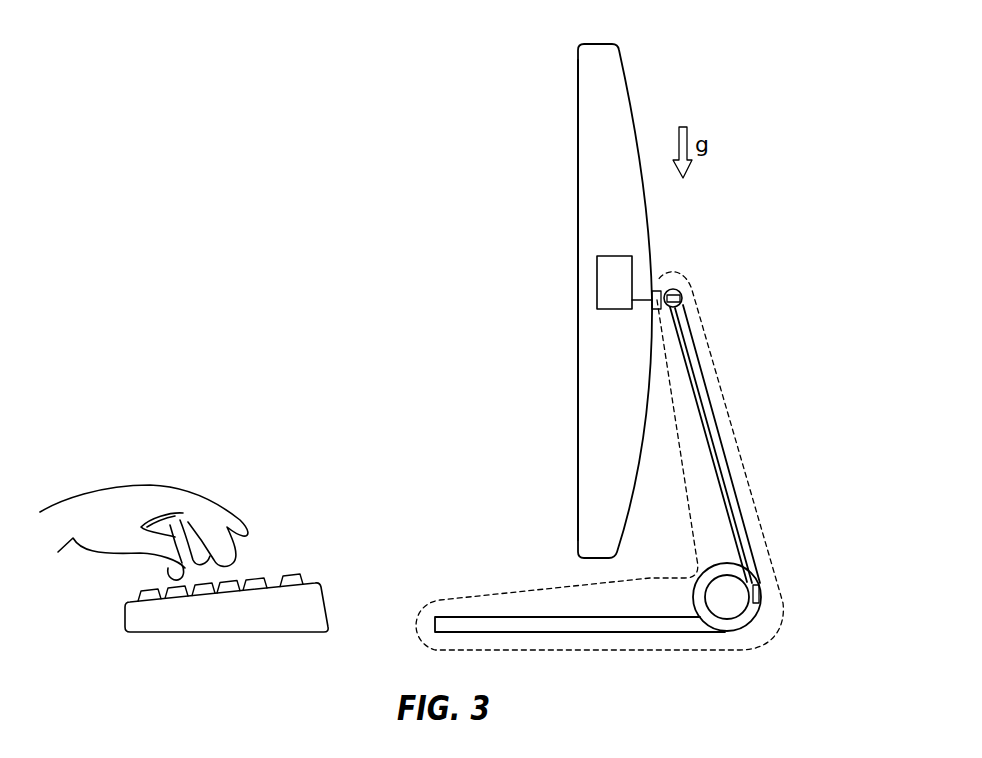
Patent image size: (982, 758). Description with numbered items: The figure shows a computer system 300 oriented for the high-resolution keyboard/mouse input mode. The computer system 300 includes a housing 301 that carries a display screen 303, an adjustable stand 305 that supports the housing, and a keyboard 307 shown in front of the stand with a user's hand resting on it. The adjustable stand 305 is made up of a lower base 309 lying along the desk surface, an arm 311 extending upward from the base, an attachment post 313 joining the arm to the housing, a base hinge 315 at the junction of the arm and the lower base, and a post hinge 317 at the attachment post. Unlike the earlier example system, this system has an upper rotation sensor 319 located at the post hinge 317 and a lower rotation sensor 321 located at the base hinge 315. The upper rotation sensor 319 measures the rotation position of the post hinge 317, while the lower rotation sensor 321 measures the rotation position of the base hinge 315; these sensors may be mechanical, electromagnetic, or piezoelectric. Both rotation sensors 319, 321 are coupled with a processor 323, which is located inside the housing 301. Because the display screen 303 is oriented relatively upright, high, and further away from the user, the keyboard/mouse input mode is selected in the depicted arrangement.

The computer system 300 is at (352, 232).
The housing 301 is at (628, 87).
The display screen 303 is at (578, 220).
The adjustable stand 305 is at (745, 468).
The keyboard 307 is at (245, 633).
The lower base 309 is at (662, 633).
The arm 311 is at (720, 442).
The attachment post 313 is at (676, 289).
The base hinge 315 is at (737, 603).
The post hinge 317 is at (682, 298).
The upper rotation sensor 319 is at (683, 306).
The lower rotation sensor 321 is at (760, 597).
The processor 323 is at (632, 263).